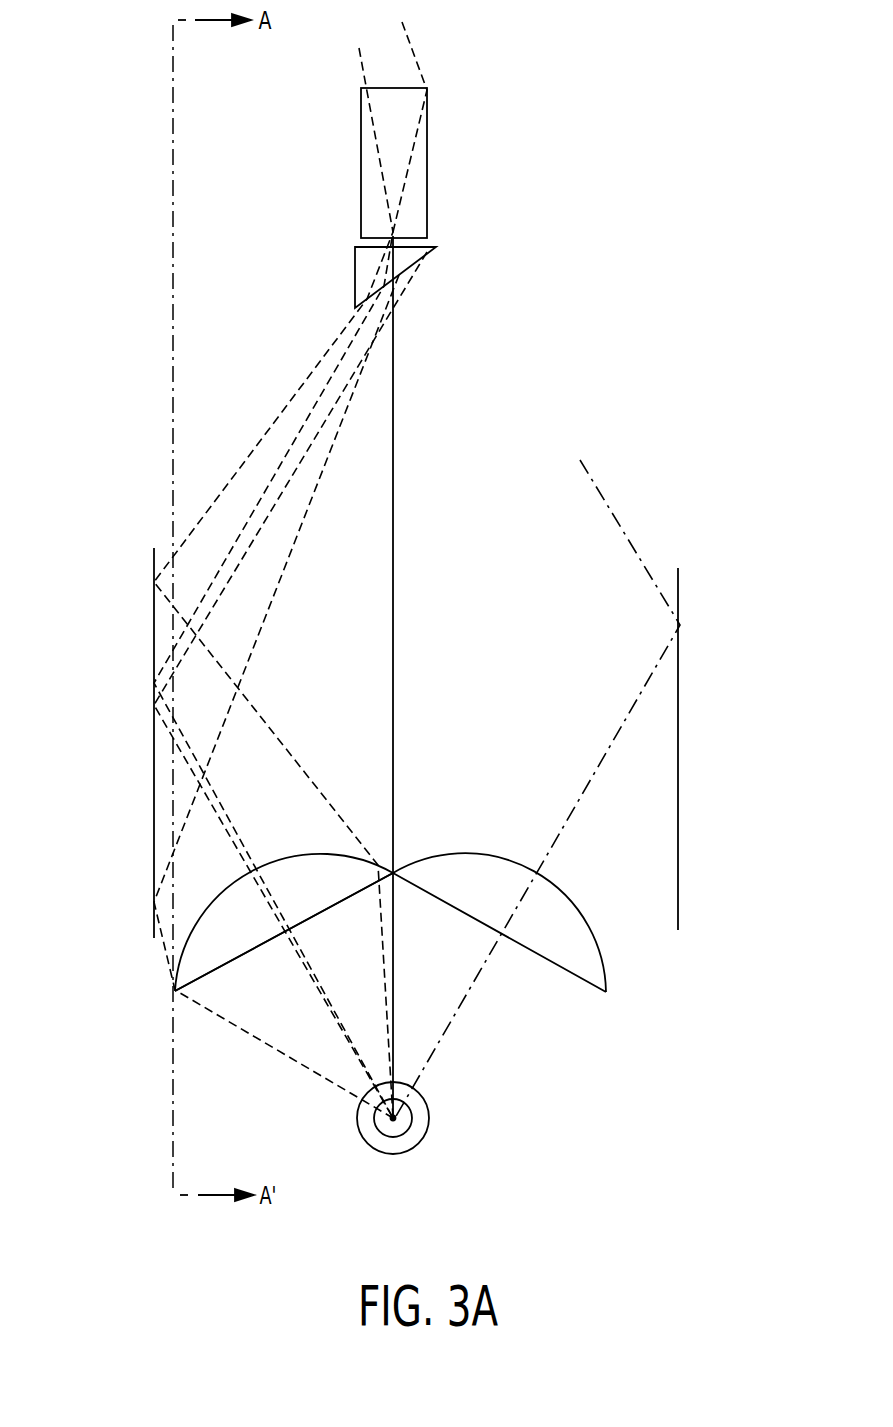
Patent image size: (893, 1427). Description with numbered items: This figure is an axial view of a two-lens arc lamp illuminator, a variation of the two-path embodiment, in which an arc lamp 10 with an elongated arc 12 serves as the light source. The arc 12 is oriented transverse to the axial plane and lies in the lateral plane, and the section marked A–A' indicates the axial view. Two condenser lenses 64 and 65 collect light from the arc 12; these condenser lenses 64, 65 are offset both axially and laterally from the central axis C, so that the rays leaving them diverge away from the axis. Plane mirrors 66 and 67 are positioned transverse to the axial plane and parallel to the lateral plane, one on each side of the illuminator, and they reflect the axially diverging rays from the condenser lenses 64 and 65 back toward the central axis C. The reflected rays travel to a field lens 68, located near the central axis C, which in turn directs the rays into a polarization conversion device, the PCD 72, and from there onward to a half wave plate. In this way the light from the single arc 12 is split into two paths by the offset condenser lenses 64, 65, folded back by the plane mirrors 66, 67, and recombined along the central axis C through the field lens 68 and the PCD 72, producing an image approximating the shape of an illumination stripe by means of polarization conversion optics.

The arc lamp 10 is at (420, 1145).
The arc 12 is at (405, 1110).
The condenser lens 64 is at (553, 962).
The condenser lens 65 is at (223, 964).
The plane mirror 66 is at (679, 776).
The plane mirror 67 is at (153, 668).
The field lens 68 is at (426, 252).
The PCD 72 is at (427, 138).
The central axis C is at (388, 495).